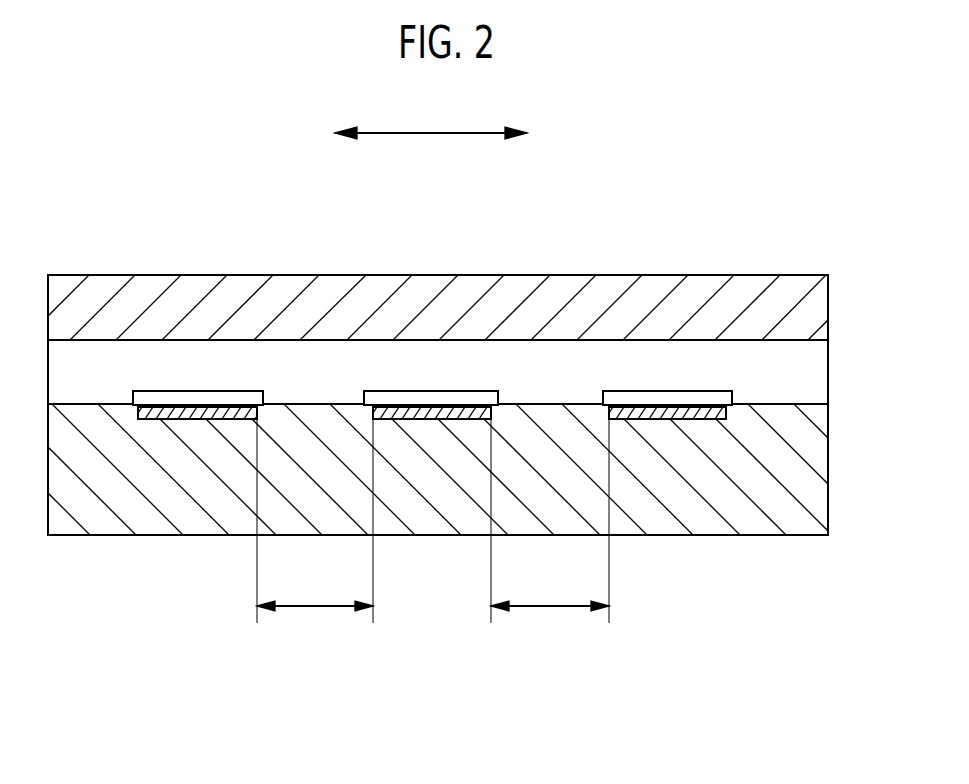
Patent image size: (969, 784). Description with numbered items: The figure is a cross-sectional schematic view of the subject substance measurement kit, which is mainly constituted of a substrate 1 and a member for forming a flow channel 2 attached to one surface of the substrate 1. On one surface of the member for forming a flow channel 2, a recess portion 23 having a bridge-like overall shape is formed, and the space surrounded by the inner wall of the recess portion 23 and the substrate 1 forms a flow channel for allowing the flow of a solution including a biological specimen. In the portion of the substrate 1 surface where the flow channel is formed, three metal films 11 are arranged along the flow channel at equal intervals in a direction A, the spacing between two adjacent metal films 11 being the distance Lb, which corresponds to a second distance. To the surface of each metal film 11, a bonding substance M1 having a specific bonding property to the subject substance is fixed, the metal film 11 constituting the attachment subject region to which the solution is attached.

The substrate 1 is at (823, 487).
The member for forming a flow channel 2 is at (823, 305).
The recess portion 23 is at (823, 375).
The metal film 11 is at (163, 418).
The bonding substance M1 is at (165, 400).
The direction A is at (431, 115).
The distance Lb is at (312, 608).